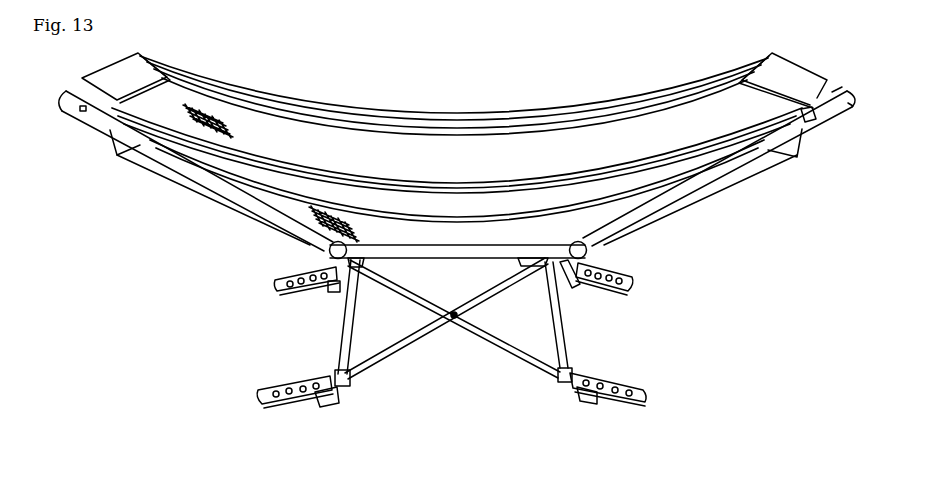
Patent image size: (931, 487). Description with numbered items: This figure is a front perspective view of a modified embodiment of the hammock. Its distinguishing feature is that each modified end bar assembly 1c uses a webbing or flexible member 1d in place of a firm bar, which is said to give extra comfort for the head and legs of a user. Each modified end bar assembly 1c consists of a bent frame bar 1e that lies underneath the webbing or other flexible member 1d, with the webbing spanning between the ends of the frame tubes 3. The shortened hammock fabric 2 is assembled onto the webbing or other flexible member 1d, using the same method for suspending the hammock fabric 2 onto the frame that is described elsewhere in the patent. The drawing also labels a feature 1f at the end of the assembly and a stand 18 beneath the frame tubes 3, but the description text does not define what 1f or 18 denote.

The hammock fabric 2 is at (583, 150).
The modified end bar assembly 1c is at (70, 124).
The webbing or flexible member 1d is at (830, 93).
The bent frame bar 1e is at (811, 124).
The pole end 1f is at (846, 108).
The frame tube 3 is at (308, 247).
The stand frame 18 is at (582, 394).